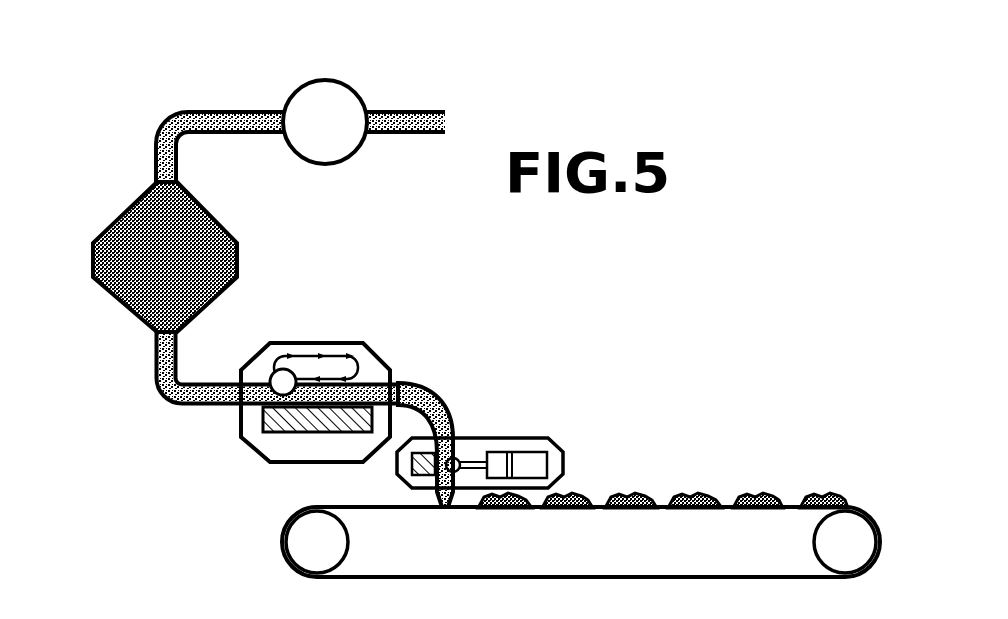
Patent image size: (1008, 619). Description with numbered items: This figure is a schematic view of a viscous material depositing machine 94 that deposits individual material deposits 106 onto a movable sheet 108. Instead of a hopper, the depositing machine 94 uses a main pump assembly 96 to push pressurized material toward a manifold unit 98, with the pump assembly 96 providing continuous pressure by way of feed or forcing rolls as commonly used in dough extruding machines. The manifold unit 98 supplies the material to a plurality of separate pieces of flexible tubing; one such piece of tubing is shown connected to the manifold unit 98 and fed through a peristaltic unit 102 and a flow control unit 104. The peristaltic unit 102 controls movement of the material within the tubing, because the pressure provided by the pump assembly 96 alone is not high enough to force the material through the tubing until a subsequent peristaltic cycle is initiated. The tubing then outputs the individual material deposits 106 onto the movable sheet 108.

The material depositing machine 94 is at (630, 289).
The main pump assembly 96 is at (302, 86).
The manifold unit 98 is at (130, 210).
The peristaltic unit 102 is at (318, 343).
The flow control unit 104 is at (538, 438).
The individual material deposits 106 is at (763, 492).
The movable sheet 108 is at (352, 505).